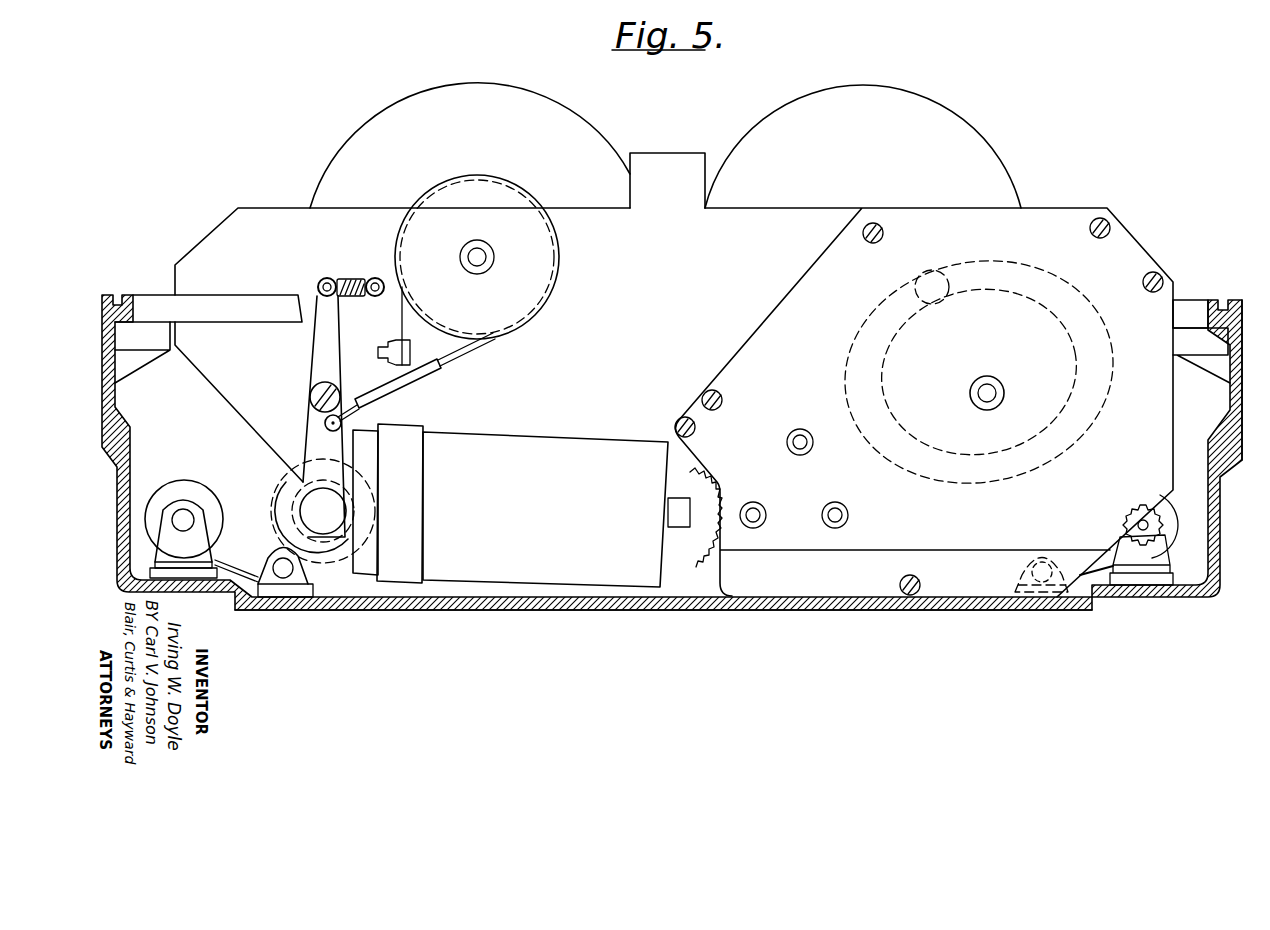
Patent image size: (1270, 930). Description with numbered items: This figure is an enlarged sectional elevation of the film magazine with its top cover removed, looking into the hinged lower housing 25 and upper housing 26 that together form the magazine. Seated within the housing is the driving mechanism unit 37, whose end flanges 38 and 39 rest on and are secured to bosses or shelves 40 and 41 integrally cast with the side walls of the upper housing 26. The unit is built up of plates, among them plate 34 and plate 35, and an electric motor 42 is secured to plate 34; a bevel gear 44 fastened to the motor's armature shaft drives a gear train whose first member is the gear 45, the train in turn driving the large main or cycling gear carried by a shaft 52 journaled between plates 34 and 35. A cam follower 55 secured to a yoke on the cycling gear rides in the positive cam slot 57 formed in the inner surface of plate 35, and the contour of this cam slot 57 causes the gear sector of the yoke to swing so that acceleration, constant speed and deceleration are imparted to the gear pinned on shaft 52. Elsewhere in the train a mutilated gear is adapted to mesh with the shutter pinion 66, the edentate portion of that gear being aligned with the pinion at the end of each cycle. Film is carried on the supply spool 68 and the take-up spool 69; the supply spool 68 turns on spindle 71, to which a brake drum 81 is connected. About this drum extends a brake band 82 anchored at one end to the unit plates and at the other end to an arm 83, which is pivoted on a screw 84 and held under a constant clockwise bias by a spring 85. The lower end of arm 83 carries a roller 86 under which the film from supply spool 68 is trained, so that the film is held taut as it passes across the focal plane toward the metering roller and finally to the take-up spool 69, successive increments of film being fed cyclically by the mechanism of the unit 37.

The lower housing 25 is at (1212, 588).
The upper housing 26 is at (1246, 325).
The plate 34 is at (612, 225).
The plate 35 is at (1063, 222).
The driving mechanism unit 37 is at (278, 200).
The end flange 38 is at (152, 302).
The end flange 39 is at (1185, 302).
The boss or shelf 40 is at (150, 338).
The boss or shelf 41 is at (1200, 348).
The electric motor 42 is at (580, 445).
The bevel gear 44 is at (650, 600).
The gear 45 is at (700, 562).
The shaft 52 is at (995, 392).
The cam follower 55 is at (942, 280).
The cam slot 57 is at (858, 335).
The shutter pinion 66 is at (1168, 508).
The film supply spool 68 is at (560, 104).
The take-up spool 69 is at (958, 118).
The spindle 71 is at (480, 256).
The brake drum 81 is at (480, 176).
The brake band 82 is at (466, 350).
The arm 83 is at (330, 345).
The screw 84 is at (311, 392).
The spring 85 is at (356, 279).
The roller 86 is at (283, 485).